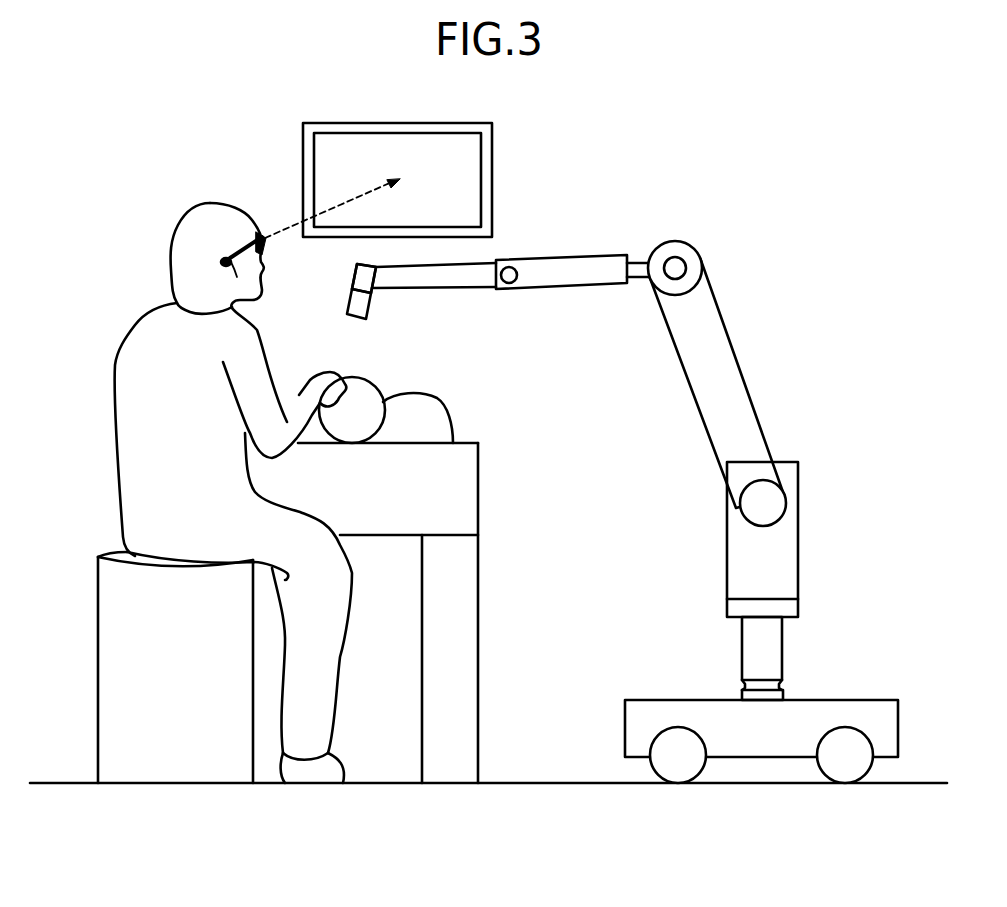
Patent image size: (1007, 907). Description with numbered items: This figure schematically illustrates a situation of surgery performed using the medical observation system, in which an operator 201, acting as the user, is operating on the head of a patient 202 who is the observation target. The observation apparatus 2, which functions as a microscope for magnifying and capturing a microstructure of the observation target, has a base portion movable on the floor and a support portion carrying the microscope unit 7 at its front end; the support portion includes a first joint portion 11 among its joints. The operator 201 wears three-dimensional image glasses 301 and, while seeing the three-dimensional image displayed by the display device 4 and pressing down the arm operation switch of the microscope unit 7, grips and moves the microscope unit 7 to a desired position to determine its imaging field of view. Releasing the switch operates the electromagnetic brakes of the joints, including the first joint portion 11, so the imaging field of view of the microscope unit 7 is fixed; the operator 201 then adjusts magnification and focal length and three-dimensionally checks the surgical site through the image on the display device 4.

The medical observation apparatus 2 is at (727, 305).
The display device 4 is at (493, 165).
The microscope unit 7 is at (365, 300).
The first joint portion 11 is at (365, 275).
The operator 201 is at (133, 340).
The patient 202 is at (428, 416).
The 3D image glasses 301 is at (253, 240).